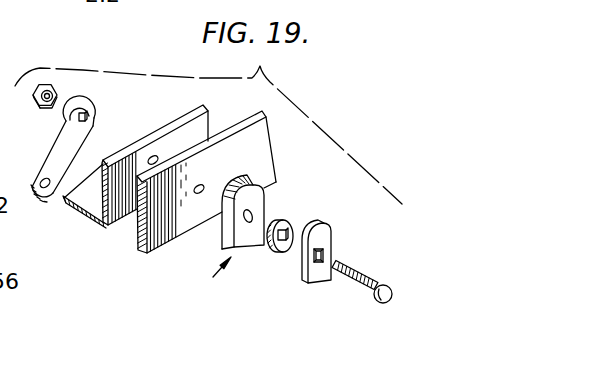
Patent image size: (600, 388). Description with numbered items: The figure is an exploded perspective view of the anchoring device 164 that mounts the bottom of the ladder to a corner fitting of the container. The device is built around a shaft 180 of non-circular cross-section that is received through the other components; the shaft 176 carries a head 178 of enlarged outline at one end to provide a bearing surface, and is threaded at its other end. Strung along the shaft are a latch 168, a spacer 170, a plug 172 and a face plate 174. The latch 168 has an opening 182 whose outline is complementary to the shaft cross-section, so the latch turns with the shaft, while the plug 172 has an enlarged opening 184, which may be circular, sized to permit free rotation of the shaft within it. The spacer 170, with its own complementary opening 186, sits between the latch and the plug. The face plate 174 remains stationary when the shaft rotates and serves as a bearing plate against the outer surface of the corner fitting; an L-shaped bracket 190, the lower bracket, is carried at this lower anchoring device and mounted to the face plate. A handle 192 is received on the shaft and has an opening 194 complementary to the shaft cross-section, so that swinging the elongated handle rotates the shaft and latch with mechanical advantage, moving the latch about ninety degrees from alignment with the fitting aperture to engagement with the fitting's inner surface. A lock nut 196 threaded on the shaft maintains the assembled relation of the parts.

The anchoring device 164 is at (202, 280).
The latch 168 is at (319, 261).
The spacer 170 is at (289, 235).
The plug 172 is at (258, 199).
The face plate 174 is at (155, 233).
The shaft 176 is at (370, 277).
The head 178 is at (389, 269).
The shaft 180 is at (352, 273).
The opening 182 is at (325, 253).
The enlarged opening 184 is at (247, 203).
The opening 186 is at (292, 226).
The bracket 190 is at (192, 127).
The handle 192 is at (63, 152).
The opening 194 is at (93, 124).
The lock nut 196 is at (52, 83).